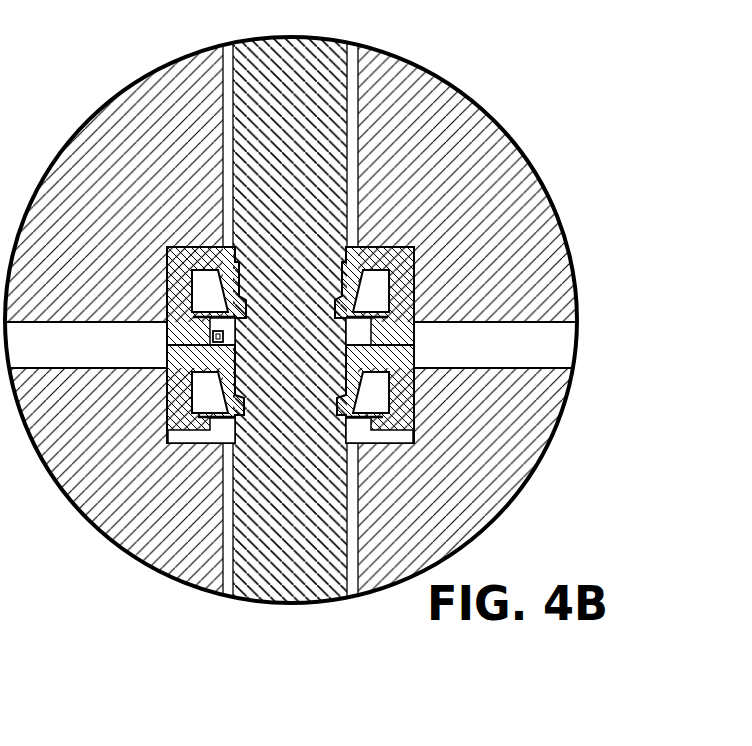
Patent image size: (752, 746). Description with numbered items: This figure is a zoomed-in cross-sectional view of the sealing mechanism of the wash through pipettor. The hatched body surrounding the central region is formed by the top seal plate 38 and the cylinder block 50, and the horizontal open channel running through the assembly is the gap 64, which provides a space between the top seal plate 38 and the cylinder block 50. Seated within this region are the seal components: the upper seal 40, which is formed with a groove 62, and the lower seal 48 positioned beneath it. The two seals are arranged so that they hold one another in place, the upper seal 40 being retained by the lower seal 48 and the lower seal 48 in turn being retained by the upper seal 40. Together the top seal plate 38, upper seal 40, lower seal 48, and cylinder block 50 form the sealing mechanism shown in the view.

The top seal plate 38 is at (415, 102).
The upper seal 40 is at (403, 292).
The lower seal 48 is at (412, 414).
The cylinder block 50 is at (0, 13).
The groove 62 is at (213, 338).
The gap 64 is at (541, 341).